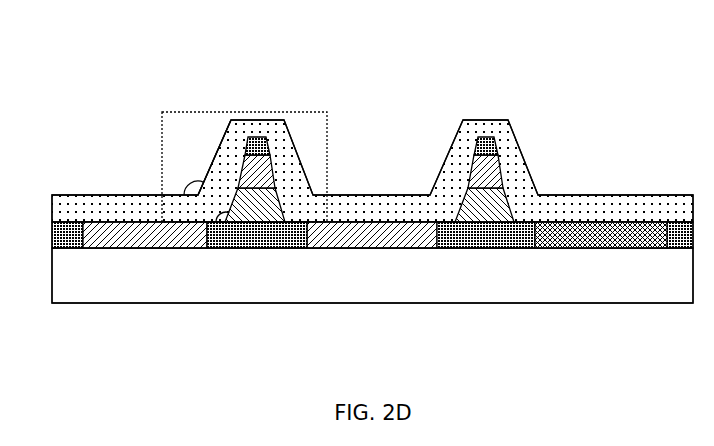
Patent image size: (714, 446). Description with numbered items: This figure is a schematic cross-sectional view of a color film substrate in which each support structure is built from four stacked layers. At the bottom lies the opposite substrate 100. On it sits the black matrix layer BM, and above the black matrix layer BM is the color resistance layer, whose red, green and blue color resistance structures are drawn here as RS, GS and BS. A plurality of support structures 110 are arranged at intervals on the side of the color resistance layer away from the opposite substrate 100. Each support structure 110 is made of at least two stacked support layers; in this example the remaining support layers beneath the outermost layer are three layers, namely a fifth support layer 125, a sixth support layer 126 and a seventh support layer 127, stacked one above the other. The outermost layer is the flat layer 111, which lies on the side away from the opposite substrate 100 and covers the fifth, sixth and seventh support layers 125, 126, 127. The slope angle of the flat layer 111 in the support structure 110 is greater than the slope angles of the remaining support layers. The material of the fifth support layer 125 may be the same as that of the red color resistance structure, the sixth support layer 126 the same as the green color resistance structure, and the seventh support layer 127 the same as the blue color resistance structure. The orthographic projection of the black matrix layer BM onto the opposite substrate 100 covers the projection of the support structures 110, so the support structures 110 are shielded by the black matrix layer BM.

The opposite substrate 100 is at (280, 287).
The support structure 110 is at (200, 112).
The flat layer 111 is at (237, 147).
The fifth support layer 125 is at (277, 213).
The sixth support layer 126 is at (268, 157).
The seventh support layer 127 is at (257, 143).
The red sub-pixel RS is at (140, 237).
The green sub-pixel GS is at (377, 235).
The black matrix layer BM is at (489, 248).
The blue sub-pixel BS is at (598, 232).